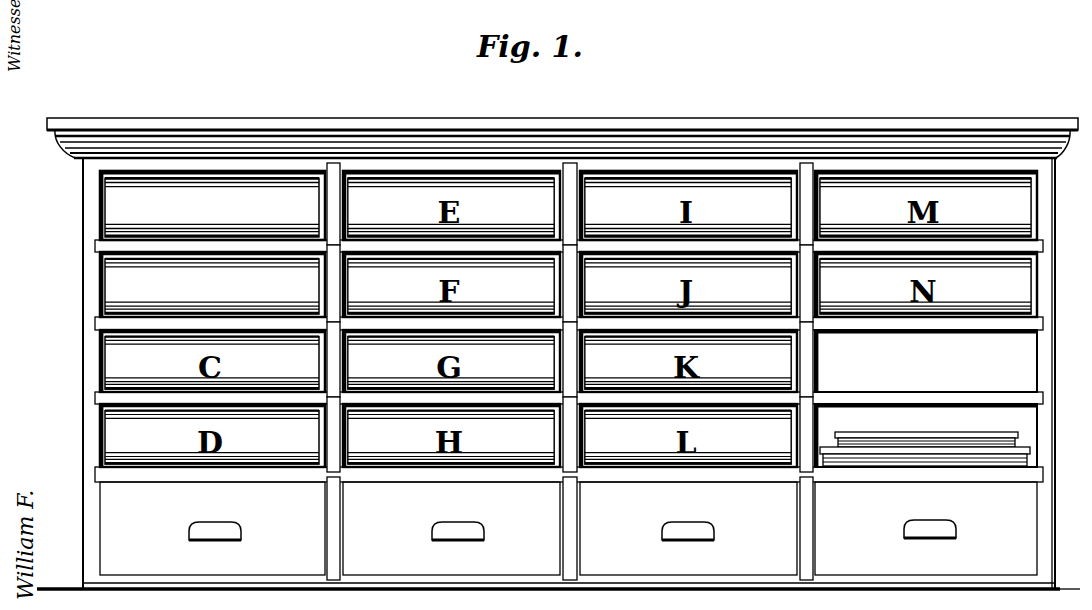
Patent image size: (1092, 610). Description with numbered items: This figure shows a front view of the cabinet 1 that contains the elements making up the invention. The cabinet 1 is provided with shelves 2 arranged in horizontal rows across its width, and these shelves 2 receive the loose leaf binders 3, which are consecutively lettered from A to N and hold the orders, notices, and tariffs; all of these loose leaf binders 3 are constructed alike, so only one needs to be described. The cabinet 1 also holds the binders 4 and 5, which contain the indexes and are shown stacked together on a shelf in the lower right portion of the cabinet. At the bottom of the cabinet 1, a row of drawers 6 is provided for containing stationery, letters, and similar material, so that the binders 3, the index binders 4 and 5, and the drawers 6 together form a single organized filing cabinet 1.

The cabinet 1 is at (288, 124).
The shelves 2 is at (97, 244).
The loose leaf binders 3 is at (212, 244).
The binder 4 is at (905, 439).
The binder 5 is at (915, 457).
The drawers 6 is at (568, 528).